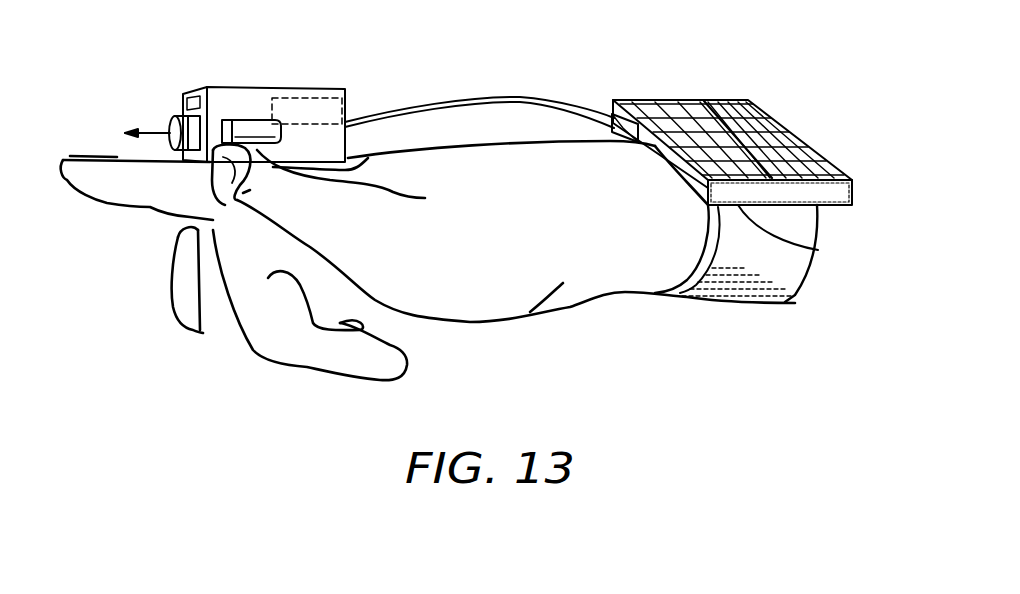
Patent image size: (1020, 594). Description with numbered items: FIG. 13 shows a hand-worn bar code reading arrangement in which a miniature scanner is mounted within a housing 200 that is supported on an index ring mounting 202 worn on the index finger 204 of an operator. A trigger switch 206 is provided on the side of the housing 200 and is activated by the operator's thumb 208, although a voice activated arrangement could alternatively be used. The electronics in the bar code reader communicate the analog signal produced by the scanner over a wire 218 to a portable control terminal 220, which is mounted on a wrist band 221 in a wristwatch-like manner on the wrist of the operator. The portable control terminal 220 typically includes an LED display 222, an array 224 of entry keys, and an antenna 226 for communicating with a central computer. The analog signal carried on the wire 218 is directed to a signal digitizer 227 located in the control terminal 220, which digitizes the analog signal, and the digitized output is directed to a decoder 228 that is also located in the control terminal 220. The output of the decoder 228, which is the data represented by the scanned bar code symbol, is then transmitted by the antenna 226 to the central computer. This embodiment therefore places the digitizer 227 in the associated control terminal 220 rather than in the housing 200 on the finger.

The housing 200 is at (263, 115).
The index ring mounting 202 is at (372, 153).
The index finger 204 is at (158, 196).
The trigger switch 206 is at (266, 128).
The thumb 208 is at (322, 208).
The wire 218 is at (521, 97).
The portable control terminal 220 is at (769, 129).
The wrist band 221 is at (772, 258).
The LED display 222 is at (655, 100).
The array of entry keys 224 is at (713, 97).
The antenna 226 is at (612, 123).
The signal digitizer 227 is at (818, 250).
The decoder 228 is at (827, 207).